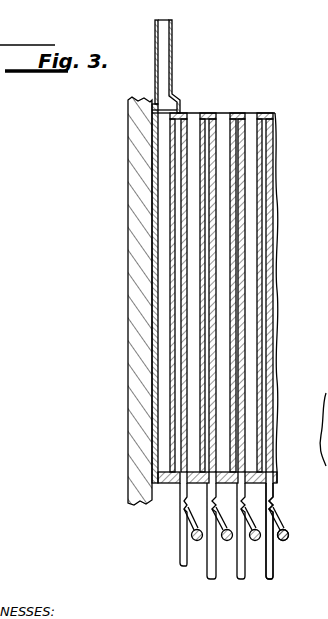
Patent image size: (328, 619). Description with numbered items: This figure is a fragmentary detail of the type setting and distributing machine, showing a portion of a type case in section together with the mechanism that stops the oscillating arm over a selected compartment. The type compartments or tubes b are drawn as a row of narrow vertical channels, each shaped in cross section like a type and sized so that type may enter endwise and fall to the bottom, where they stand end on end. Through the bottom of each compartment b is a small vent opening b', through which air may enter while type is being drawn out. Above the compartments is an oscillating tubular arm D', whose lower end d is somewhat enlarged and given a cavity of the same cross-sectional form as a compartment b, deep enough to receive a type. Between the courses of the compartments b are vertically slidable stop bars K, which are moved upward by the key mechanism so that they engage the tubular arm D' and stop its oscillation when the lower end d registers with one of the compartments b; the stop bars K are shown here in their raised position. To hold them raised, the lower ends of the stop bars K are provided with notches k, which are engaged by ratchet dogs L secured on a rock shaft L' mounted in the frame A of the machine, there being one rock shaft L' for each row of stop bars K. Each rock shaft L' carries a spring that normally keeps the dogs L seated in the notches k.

The end plate A is at (128, 272).
The oscillating tubular arm D' is at (179, 59).
The lower end of tubular arm d is at (174, 98).
The stop bar K is at (260, 113).
The type compartment b is at (217, 295).
The vent opening b' is at (217, 489).
The notch k is at (185, 505).
The ratchet dog L is at (281, 531).
The rock shaft L' is at (295, 530).